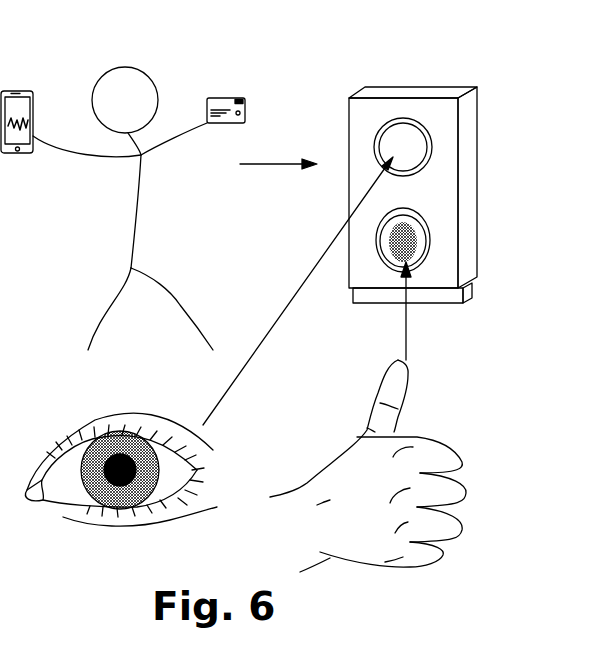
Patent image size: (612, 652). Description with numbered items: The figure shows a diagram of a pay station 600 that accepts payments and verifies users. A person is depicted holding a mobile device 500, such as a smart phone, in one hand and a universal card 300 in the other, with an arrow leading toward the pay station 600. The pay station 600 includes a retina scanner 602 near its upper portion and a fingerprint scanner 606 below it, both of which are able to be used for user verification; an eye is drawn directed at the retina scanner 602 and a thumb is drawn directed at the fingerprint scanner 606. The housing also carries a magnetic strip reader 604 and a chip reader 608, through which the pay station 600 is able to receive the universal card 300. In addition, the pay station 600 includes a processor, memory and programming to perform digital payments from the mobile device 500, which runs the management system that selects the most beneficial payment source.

The mobile device 500 is at (22, 90).
The universal card 300 is at (228, 97).
The pay station 600 is at (436, 186).
The retina scanner 602 is at (403, 118).
The magnetic strip reader 604 is at (460, 187).
The fingerprint scanner 606 is at (428, 247).
The chip reader 608 is at (440, 303).